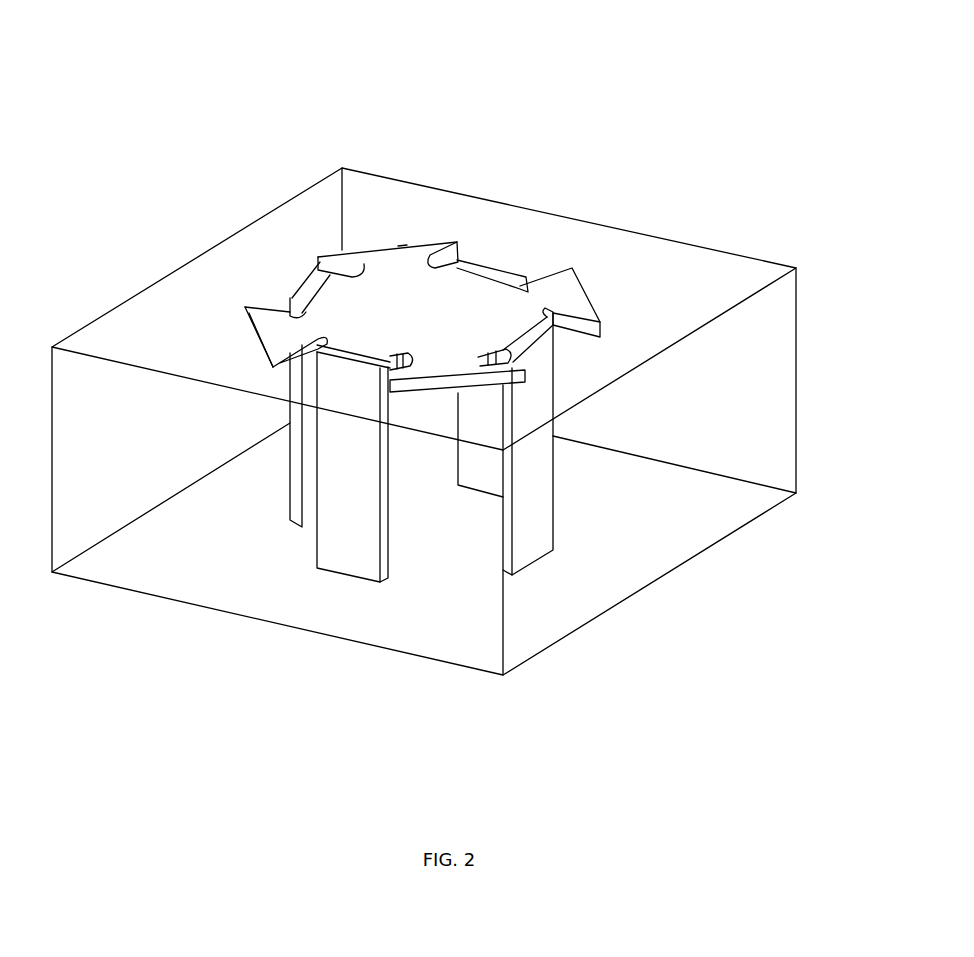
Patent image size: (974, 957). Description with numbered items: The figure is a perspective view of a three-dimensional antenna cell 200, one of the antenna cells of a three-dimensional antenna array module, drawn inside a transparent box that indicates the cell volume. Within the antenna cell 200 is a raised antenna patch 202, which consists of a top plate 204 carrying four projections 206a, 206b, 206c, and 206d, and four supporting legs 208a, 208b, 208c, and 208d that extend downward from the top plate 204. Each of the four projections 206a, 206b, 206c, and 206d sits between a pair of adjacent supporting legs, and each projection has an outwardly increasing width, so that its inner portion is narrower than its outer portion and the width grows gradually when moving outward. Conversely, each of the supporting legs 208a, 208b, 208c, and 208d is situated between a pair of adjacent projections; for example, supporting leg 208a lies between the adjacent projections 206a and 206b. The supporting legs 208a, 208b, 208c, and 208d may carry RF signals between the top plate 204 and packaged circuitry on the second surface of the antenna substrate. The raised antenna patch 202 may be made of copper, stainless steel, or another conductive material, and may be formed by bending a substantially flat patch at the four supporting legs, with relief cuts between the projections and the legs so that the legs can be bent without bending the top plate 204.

The 3-D antenna cell 200 is at (847, 133).
The raised antenna patch 202 is at (507, 240).
The top plate 204 is at (430, 323).
The projection 206a is at (467, 373).
The projection 206b is at (243, 307).
The projection 206c is at (402, 247).
The projection 206d is at (590, 303).
The supporting leg 208a is at (360, 364).
The supporting leg 208b is at (312, 300).
The supporting leg 208c is at (510, 262).
The supporting leg 208d is at (525, 372).